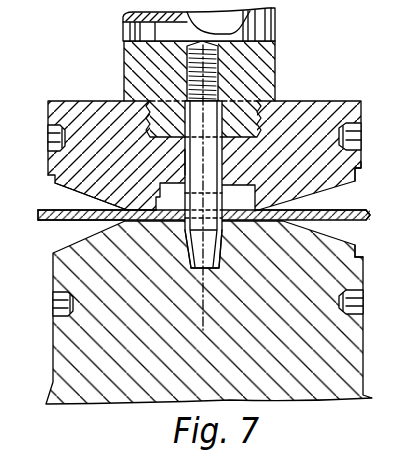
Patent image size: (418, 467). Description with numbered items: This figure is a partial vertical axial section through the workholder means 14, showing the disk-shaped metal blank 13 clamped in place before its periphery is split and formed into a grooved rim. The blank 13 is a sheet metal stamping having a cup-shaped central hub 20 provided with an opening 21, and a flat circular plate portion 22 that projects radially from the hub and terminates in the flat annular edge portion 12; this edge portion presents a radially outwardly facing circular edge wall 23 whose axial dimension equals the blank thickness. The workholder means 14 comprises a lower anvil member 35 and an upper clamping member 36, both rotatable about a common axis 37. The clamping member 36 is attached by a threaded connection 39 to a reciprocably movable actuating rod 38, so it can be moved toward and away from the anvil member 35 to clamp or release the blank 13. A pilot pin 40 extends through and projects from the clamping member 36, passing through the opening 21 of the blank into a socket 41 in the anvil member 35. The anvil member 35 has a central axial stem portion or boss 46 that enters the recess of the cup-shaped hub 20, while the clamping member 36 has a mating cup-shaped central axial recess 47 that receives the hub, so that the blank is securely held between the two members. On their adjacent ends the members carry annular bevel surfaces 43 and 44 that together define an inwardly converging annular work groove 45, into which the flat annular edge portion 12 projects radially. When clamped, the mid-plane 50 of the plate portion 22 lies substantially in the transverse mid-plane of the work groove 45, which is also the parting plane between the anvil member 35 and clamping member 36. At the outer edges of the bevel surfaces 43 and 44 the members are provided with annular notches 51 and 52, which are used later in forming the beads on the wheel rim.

The edge portion 12 is at (47, 209).
The disk-shaped metal blank 13 is at (355, 206).
The workholder means 14 is at (62, 101).
The cup-shaped central hub 20 is at (158, 187).
The opening 21 is at (185, 160).
The flat circular plate portion 22 is at (102, 211).
The circular edge wall 23 is at (37, 219).
The anvil member 35 is at (357, 278).
The clamping member 36 is at (367, 86).
The common axis 37 is at (205, 297).
The actuating rod 38 is at (278, 32).
The threaded connection 39 is at (281, 101).
The pilot pin 40 is at (224, 162).
The socket 41 is at (226, 238).
The annular bevel surface 43 is at (353, 243).
The annular bevel surface 44 is at (355, 184).
The annular work groove 45 is at (356, 217).
The central axial stem portion or boss 46 is at (252, 190).
The cup-shaped central axial recess 47 is at (154, 205).
The mid-plane 50 is at (50, 221).
The annular recess or notch 51 is at (363, 249).
The annular recess or notch 52 is at (362, 166).